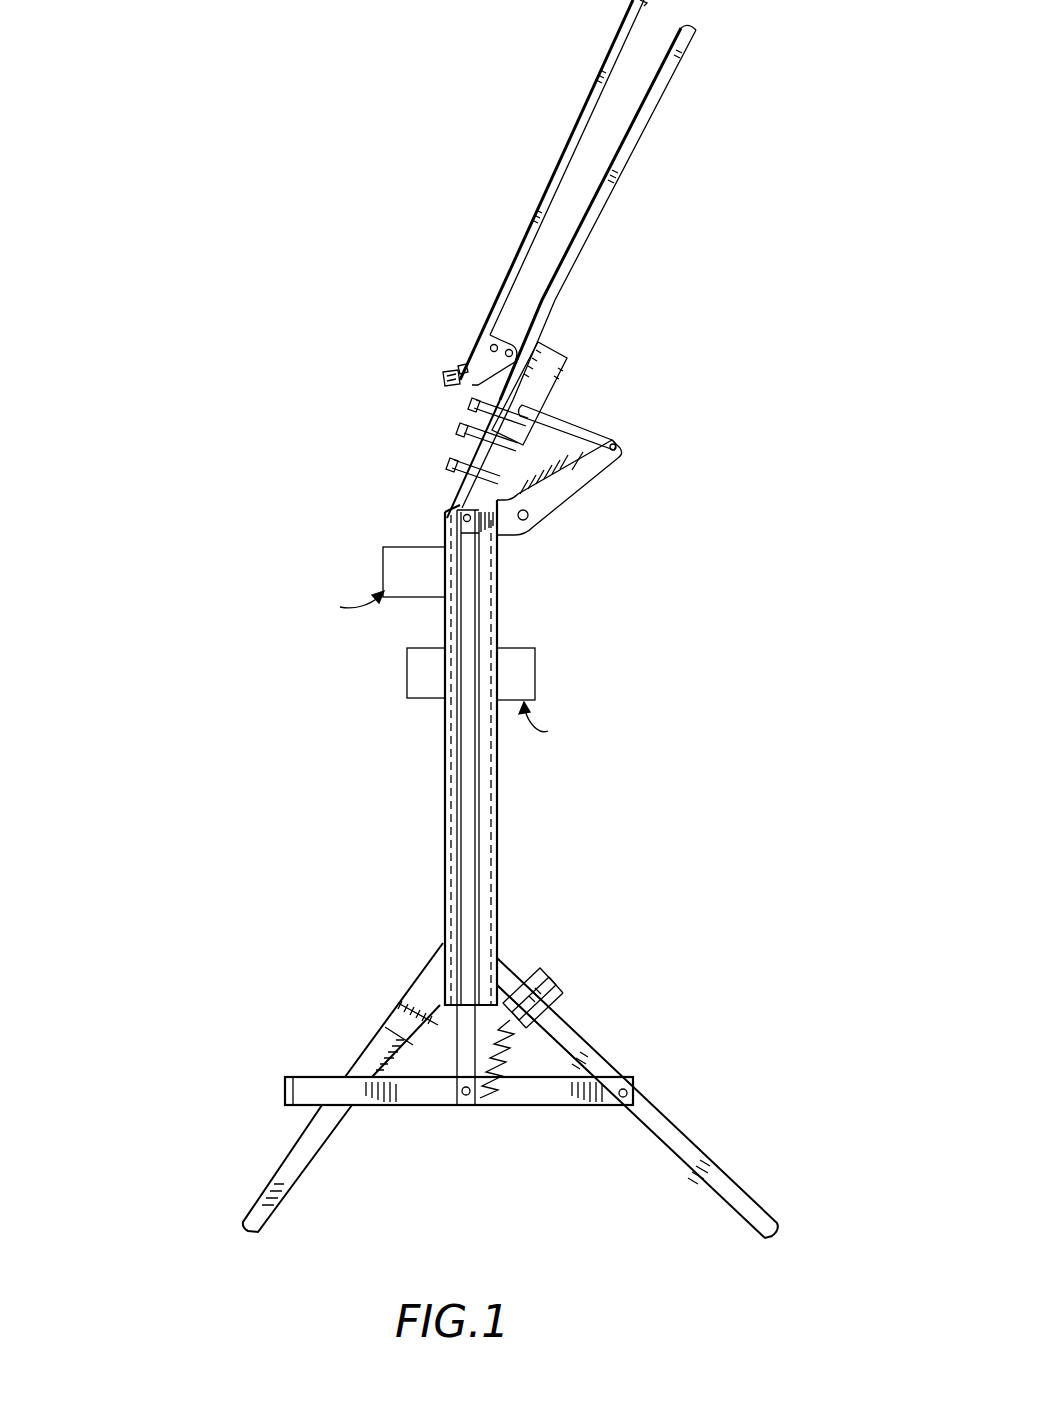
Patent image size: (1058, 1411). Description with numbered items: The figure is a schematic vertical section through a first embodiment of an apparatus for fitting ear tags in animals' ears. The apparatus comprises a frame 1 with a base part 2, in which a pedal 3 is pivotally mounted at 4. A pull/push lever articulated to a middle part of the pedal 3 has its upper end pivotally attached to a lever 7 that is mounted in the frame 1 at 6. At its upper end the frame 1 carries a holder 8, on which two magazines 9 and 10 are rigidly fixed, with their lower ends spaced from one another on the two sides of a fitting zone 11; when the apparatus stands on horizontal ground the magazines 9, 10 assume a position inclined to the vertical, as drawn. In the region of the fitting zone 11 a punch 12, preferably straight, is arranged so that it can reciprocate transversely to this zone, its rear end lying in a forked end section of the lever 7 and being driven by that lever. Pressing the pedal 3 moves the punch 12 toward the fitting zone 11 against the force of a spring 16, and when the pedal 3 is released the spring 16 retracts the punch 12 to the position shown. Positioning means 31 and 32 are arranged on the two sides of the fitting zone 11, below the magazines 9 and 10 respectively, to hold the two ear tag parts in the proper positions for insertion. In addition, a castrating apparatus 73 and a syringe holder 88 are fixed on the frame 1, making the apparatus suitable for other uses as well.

The frame 1 is at (445, 765).
The base part 2 is at (730, 1182).
The pedal 3 is at (322, 1092).
The pivot of the pedal 4 is at (626, 1089).
The pivot of the lever 6 is at (528, 519).
The lever 7 is at (556, 506).
The holder 8 is at (548, 367).
The magazine 9 is at (617, 185).
The magazine 10 is at (563, 152).
The fitting zone 11 is at (472, 388).
The punch 12 is at (578, 420).
The spring 16 is at (540, 1020).
The positioning means 31 is at (488, 398).
The positioning means 32 is at (458, 372).
The castrating apparatus 73 is at (520, 655).
The syringe holder 88 is at (400, 546).